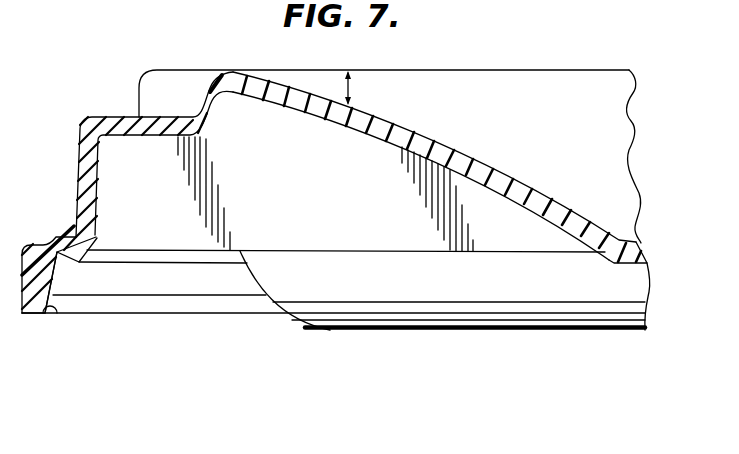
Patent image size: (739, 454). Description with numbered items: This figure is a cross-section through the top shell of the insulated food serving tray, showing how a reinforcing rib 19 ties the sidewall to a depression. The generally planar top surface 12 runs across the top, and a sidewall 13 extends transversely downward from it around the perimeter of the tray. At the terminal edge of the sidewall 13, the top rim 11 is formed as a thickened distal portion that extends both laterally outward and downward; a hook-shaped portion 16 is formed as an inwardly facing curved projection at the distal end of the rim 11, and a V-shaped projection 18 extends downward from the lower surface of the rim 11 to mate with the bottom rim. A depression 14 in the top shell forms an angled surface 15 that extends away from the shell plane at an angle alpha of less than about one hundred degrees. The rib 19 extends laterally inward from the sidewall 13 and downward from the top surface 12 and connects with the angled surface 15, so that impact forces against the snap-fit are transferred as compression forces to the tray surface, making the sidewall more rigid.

The top rim 11 is at (44, 229).
The top surface 12 is at (464, 70).
The sidewall 13 is at (78, 178).
The depression 14 is at (627, 242).
The angled surface 15 is at (357, 129).
The hook-shaped portion 16 is at (43, 311).
The V-shaped projection 18 is at (82, 263).
The reinforcing rib 19 is at (281, 224).